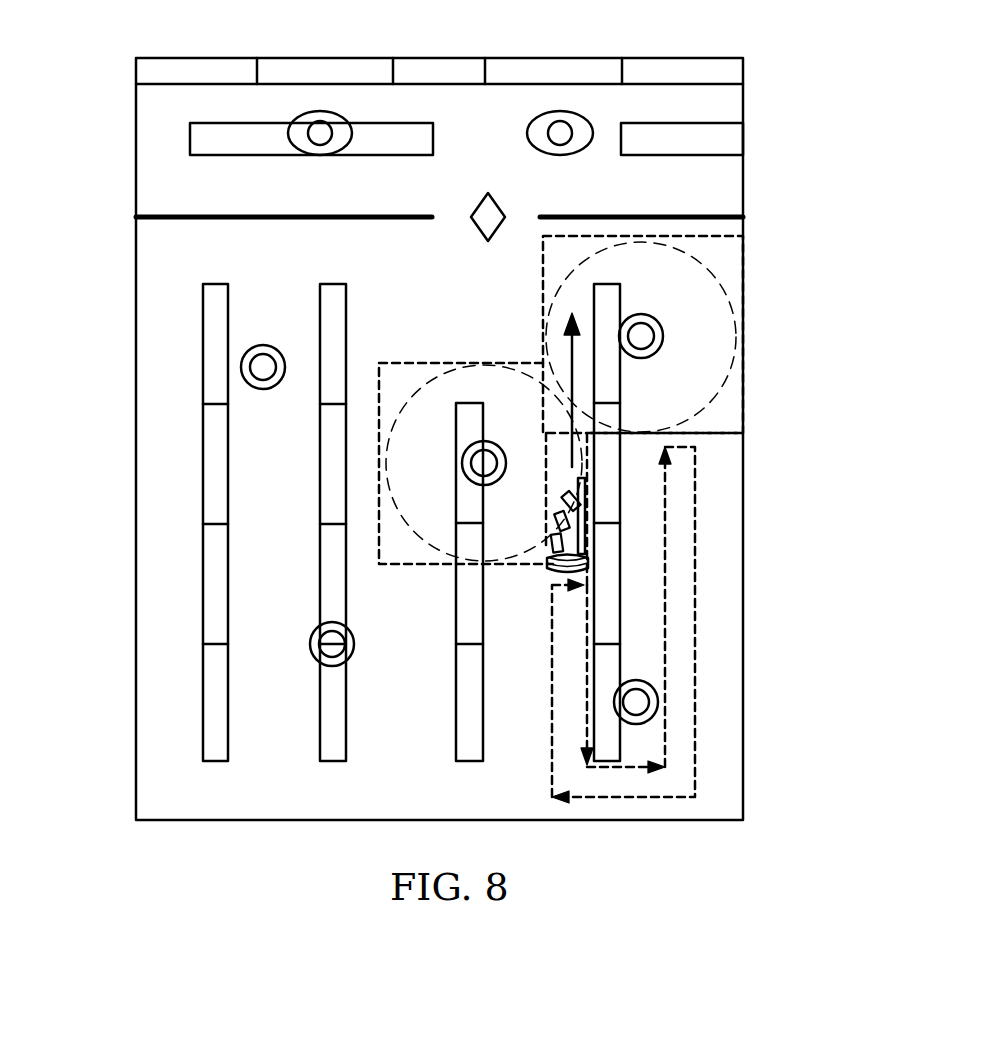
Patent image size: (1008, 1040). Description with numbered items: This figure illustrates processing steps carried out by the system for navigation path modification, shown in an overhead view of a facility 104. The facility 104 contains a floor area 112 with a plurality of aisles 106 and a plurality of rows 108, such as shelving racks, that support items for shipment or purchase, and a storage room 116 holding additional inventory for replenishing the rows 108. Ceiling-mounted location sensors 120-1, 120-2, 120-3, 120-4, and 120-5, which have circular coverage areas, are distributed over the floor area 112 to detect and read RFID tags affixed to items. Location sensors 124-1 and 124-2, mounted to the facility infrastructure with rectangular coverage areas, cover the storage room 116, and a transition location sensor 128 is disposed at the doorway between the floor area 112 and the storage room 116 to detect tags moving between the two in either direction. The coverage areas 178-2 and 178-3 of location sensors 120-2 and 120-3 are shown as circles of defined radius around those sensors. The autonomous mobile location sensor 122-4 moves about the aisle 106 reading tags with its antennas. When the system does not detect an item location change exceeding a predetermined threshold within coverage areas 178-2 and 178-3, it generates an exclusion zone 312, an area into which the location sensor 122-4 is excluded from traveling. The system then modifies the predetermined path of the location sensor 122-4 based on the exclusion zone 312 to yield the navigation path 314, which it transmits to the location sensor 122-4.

The facility 104 is at (758, 312).
The aisle 106 is at (150, 736).
The row 108 is at (216, 763).
The floor area 112 is at (733, 487).
The storage room 116 is at (733, 182).
The location sensor 120-1 is at (276, 346).
The location sensor 120-2 is at (663, 336).
The location sensor 120-3 is at (484, 440).
The location sensor 120-4 is at (310, 644).
The location sensor 120-5 is at (658, 702).
The location sensor 122-4 is at (585, 493).
The location sensor 124-1 is at (310, 112).
The location sensor 124-2 is at (550, 112).
The transition location sensor 128 is at (486, 236).
The coverage area 178-2 is at (552, 300).
The coverage area 178-3 is at (448, 567).
The exclusion zone 312 is at (743, 428).
The navigation path 314 is at (700, 598).